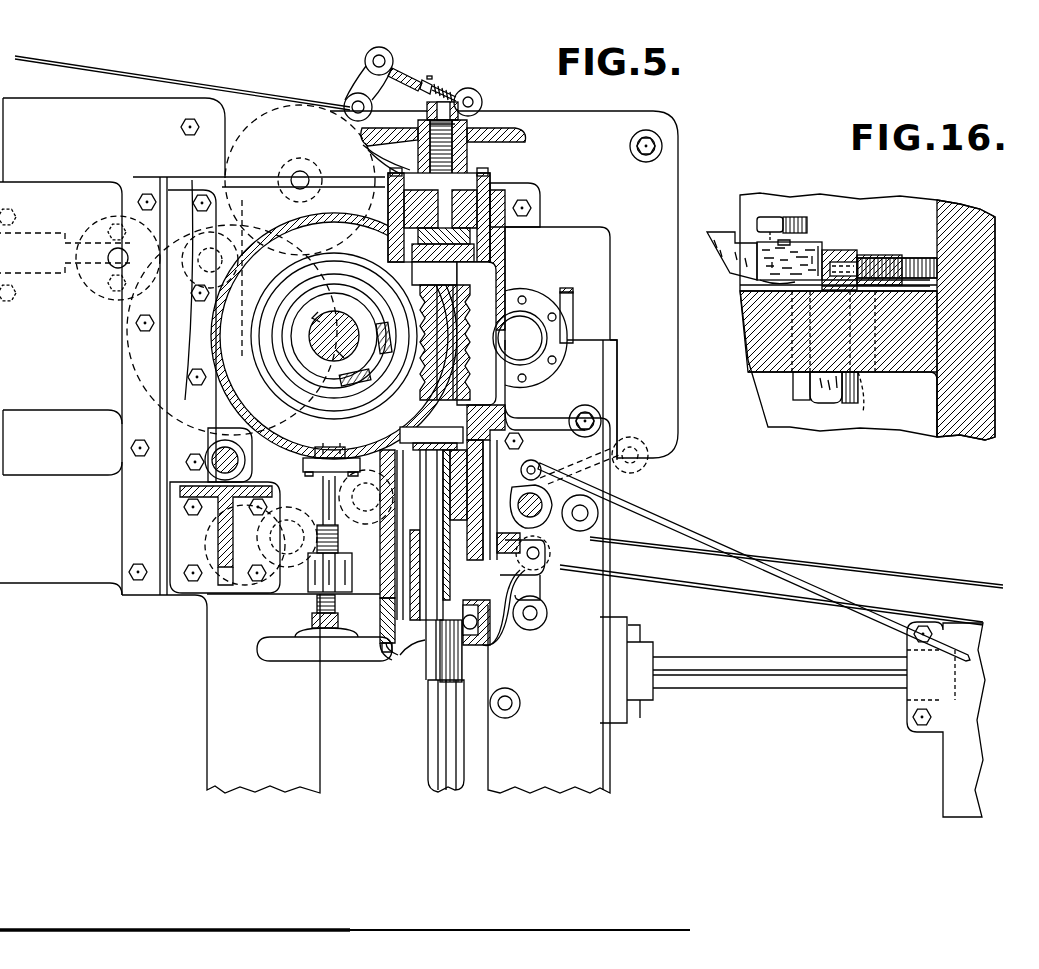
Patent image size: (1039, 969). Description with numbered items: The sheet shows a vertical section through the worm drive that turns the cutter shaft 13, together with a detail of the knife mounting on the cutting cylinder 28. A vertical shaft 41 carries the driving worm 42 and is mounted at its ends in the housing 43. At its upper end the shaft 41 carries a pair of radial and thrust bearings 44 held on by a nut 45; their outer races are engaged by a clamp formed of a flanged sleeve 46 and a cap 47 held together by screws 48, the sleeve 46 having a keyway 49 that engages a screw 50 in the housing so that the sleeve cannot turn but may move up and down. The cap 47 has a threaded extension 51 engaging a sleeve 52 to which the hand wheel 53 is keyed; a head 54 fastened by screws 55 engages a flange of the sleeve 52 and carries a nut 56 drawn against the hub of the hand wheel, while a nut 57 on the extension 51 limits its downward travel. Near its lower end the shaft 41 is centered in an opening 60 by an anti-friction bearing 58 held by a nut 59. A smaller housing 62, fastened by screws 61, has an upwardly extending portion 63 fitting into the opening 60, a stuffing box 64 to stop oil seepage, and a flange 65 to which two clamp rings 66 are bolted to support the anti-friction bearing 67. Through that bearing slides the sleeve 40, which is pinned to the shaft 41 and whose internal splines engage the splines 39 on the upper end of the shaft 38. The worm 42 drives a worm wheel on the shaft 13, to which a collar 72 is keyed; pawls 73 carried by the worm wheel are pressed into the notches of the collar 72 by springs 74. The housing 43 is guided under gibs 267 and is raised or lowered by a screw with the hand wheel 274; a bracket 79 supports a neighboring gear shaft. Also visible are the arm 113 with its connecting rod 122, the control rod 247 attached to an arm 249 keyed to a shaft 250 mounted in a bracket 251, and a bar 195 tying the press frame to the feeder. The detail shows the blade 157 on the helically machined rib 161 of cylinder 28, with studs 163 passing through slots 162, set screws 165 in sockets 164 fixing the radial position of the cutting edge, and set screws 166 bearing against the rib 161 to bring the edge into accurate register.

In FIG. 5, the shaft 13 is at (338, 358).
In FIG. 16, the cylinder 28 is at (992, 410).
In FIG. 5, the shaft 38 is at (423, 735).
In FIG. 5, the splines 39 is at (443, 667).
In FIG. 5, the sleeve 40 is at (428, 660).
In FIG. 5, the shaft 41 is at (426, 457).
In FIG. 5, the driving worm 42 is at (466, 344).
In FIG. 5, the housing 43 is at (533, 337).
In FIG. 5, the radial and thrust bearings 44 is at (454, 333).
In FIG. 5, the nut 45 is at (404, 235).
In FIG. 5, the flanged sleeve 46 is at (405, 260).
In FIG. 5, the cap 47 is at (388, 193).
In FIG. 5, the screws 48 is at (498, 185).
In FIG. 5, the keyway 49 is at (470, 237).
In FIG. 5, the screw 50 is at (474, 253).
In FIG. 5, the threaded extension 51 is at (458, 125).
In FIG. 5, the sleeve 52 is at (468, 158).
In FIG. 5, the hand wheel 53 is at (526, 136).
In FIG. 5, the head 54 is at (372, 160).
In FIG. 5, the screws 55 is at (378, 170).
In FIG. 5, the nut 56 is at (428, 120).
In FIG. 5, the nut 57 is at (426, 103).
In FIG. 5, the anti-friction bearing 58 is at (486, 413).
In FIG. 5, the nut 59 is at (497, 458).
In FIG. 5, the opening 60 is at (412, 424).
In FIG. 5, the screws 61 is at (340, 546).
In FIG. 5, the housing 62 is at (380, 582).
In FIG. 5, the upwardly extending portion 63 is at (343, 468).
In FIG. 5, the stuffing box 64 is at (352, 555).
In FIG. 5, the flange 65 is at (380, 602).
In FIG. 5, the clamp rings 66 is at (490, 632).
In FIG. 5, the anti-friction bearing 67 is at (388, 658).
In FIG. 5, the collar 72 is at (334, 336).
In FIG. 5, the pawls 73 is at (378, 360).
In FIG. 5, the springs 74 is at (410, 400).
In FIG. 5, the bracket 79 is at (222, 533).
In FIG. 5, the arm 113 is at (368, 80).
In FIG. 5, the connecting rod 122 is at (410, 72).
In FIG. 16, the blade 157 is at (865, 250).
In FIG. 16, the rib 161 is at (907, 364).
In FIG. 16, the slots 162 is at (866, 408).
In FIG. 16, the studs 163 is at (800, 402).
In FIG. 16, the sockets 164 is at (882, 252).
In FIG. 16, the set screws 165 is at (897, 256).
In FIG. 16, the set screws 166 is at (787, 218).
In FIG. 5, the bar 195 is at (775, 663).
In FIG. 5, the control rod 247 is at (690, 540).
In FIG. 5, the arm 249 is at (610, 455).
In FIG. 5, the shaft 250 is at (540, 515).
In FIG. 5, the bracket 251 is at (535, 585).
In FIG. 5, the gibs 267 is at (186, 208).
In FIG. 5, the hand wheel 274 is at (300, 655).